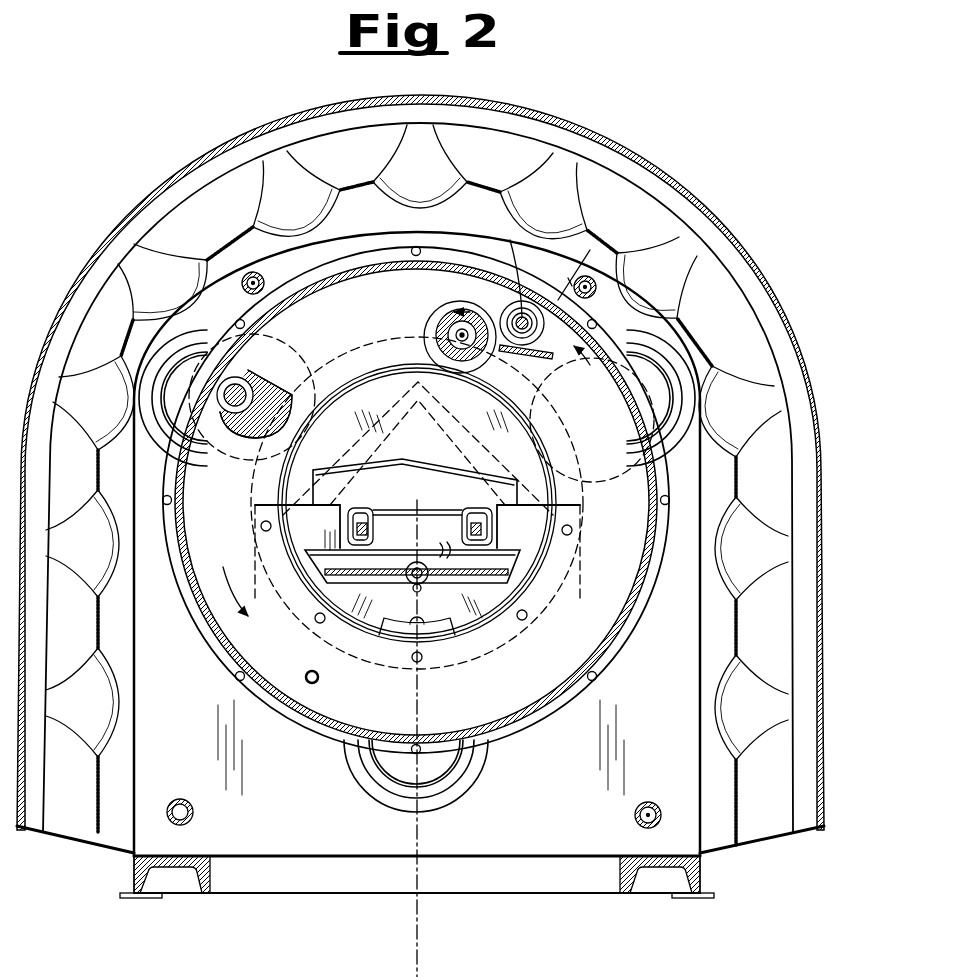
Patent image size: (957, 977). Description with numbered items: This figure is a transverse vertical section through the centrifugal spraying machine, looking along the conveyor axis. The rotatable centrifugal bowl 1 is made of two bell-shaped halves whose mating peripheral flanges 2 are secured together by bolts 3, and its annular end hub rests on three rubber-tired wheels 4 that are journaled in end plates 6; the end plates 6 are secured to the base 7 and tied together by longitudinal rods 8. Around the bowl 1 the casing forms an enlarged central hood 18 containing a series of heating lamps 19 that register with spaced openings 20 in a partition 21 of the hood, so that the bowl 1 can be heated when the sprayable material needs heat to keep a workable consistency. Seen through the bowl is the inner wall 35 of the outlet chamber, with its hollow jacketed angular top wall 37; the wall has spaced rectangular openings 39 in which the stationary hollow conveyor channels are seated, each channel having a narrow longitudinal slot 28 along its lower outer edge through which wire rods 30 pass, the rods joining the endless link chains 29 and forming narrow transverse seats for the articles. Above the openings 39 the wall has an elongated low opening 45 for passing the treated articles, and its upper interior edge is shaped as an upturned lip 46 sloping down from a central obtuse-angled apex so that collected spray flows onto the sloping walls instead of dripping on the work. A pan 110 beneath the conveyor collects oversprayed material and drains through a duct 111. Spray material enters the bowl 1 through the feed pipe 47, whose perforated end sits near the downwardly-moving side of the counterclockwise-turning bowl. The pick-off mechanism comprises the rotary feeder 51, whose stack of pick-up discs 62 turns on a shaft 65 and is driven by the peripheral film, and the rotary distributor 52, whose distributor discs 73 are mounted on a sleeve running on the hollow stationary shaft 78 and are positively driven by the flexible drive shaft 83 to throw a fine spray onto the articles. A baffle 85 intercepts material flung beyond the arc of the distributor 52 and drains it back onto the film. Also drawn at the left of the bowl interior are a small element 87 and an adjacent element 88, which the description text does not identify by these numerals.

The centrifugal bowl 1 is at (640, 618).
The peripheral flanges 2 is at (521, 735).
The bolts 3 is at (421, 249).
The rubber-tired wheels 4 is at (294, 342).
The end plates 6 is at (397, 856).
The base 7 is at (622, 893).
The longitudinal rods 8 is at (264, 277).
The central hood 18 is at (128, 232).
The heating lamps 19 is at (443, 158).
The openings 20 is at (602, 229).
The partition 21 is at (347, 184).
The longitudinal slots 28 is at (515, 569).
The endless link chains 29 is at (362, 526).
The wire rods 30 is at (431, 512).
The inner wall 35 is at (366, 604).
The top wall 37 is at (417, 503).
The rectangular openings 39 is at (417, 564).
The opening 45 is at (353, 484).
The lip 46 is at (422, 478).
The feed pipe 47 is at (319, 678).
The rotary feeder 51 is at (511, 308).
The rotary distributor 52 is at (443, 315).
The pick-up discs 62 is at (551, 290).
The shaft 65 is at (508, 265).
The distributor discs 73 is at (446, 324).
The hollow stationary shaft 78 is at (456, 336).
The flexible drive shaft 83 is at (446, 350).
The baffle 85 is at (545, 362).
The knob 87 is at (248, 378).
The arm 88 is at (250, 400).
The pan 110 is at (418, 561).
The duct 111 is at (426, 585).